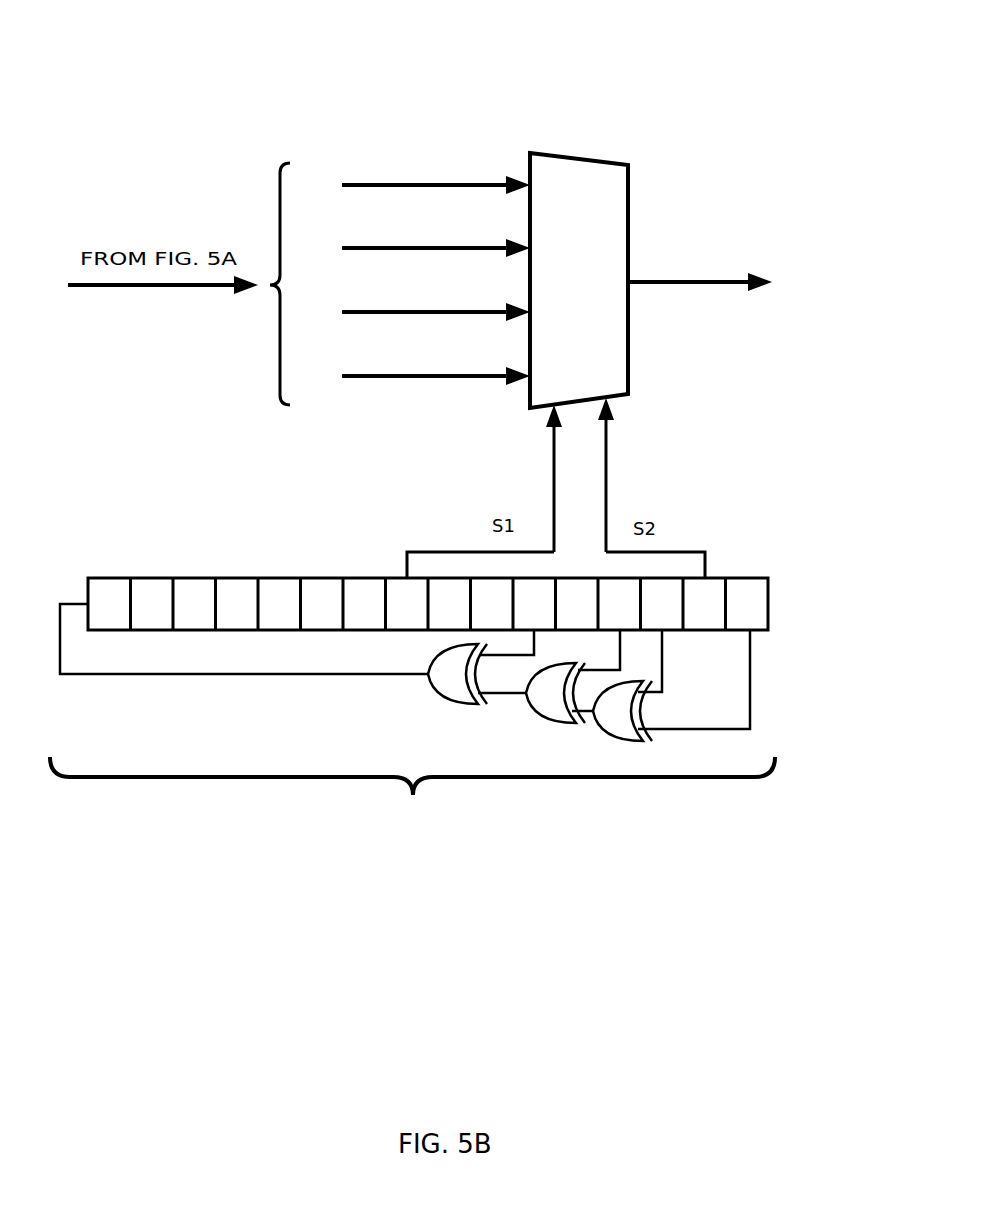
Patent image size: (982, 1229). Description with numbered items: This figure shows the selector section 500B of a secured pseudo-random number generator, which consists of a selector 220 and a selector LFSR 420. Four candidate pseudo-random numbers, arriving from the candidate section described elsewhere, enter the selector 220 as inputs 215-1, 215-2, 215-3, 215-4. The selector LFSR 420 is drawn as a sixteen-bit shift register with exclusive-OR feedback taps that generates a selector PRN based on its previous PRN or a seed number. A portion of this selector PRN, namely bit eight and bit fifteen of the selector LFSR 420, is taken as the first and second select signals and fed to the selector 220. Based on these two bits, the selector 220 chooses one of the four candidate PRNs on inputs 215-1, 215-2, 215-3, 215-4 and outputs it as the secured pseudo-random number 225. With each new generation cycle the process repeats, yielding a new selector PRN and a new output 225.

The selector section 500B is at (430, 413).
The candidate PRN input 215-1 is at (436, 174).
The candidate PRN input 215-2 is at (436, 237).
The candidate PRN input 215-3 is at (436, 301).
The candidate PRN input 215-4 is at (436, 365).
The selector 220 is at (561, 292).
The secured pseudo-random number 225 is at (700, 268).
The selector LFSR 420 is at (360, 577).